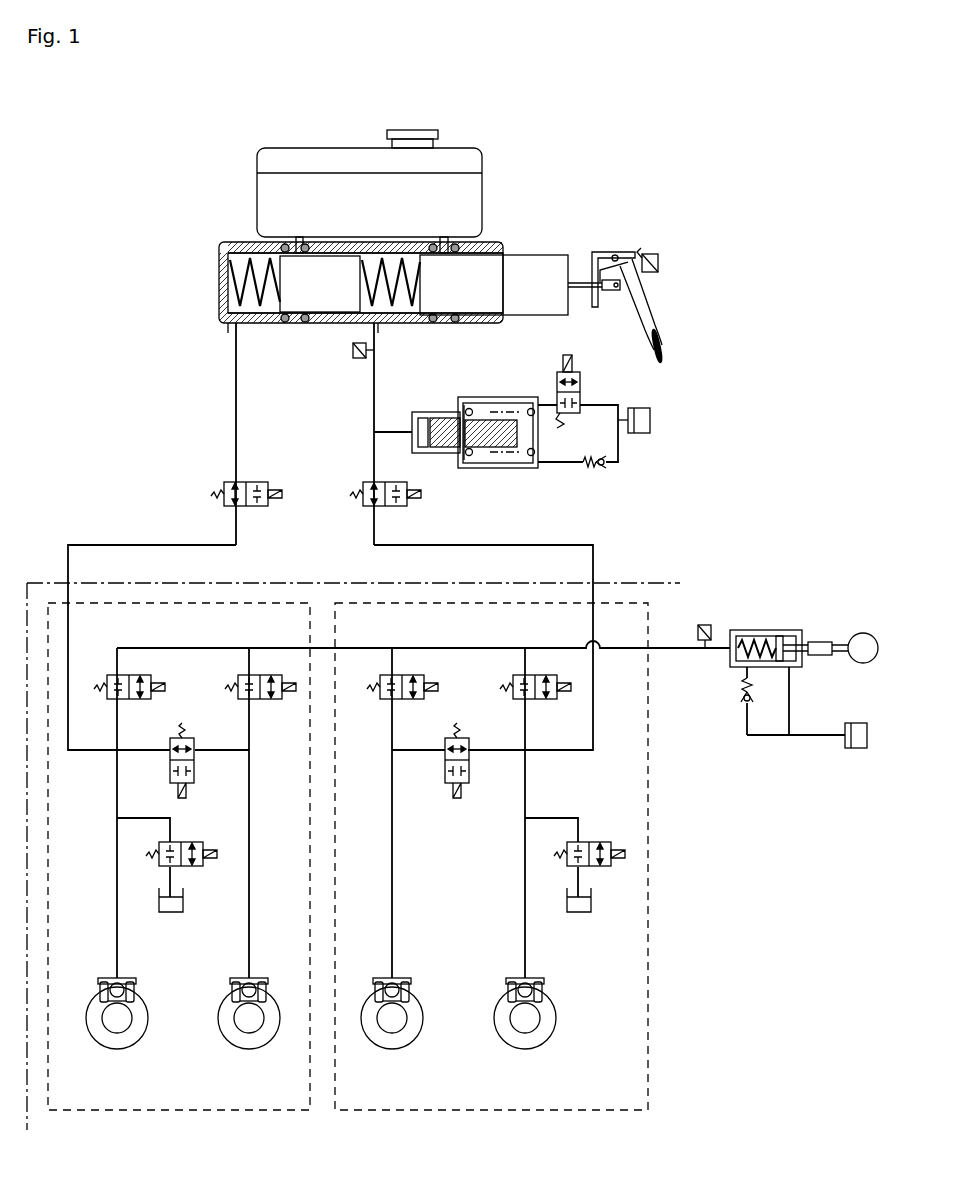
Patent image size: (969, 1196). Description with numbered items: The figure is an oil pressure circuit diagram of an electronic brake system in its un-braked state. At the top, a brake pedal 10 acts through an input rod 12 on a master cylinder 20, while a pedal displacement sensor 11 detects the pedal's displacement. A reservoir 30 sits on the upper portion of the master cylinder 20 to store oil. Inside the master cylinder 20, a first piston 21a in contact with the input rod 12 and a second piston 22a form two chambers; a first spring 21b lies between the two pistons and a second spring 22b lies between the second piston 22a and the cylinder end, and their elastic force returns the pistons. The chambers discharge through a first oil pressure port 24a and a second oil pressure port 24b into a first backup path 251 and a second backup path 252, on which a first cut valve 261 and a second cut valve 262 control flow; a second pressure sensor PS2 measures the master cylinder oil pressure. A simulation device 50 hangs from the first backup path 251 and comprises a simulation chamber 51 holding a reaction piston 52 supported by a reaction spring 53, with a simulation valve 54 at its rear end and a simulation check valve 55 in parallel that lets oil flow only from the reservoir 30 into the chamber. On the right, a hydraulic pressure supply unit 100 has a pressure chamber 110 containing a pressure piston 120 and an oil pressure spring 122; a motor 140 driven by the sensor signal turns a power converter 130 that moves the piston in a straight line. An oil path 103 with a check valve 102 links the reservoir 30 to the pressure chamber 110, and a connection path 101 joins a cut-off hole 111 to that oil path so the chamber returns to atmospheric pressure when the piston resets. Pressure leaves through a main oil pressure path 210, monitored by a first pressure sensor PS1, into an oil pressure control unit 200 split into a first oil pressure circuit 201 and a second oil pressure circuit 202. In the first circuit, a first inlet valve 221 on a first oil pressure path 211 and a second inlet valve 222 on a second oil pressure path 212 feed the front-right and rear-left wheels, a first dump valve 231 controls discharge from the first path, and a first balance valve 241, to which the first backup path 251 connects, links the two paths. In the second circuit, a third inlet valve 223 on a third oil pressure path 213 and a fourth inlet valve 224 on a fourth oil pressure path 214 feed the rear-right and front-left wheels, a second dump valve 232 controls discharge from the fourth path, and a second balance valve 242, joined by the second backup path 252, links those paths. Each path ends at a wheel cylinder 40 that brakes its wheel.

The brake pedal 10 is at (632, 302).
The pedal displacement sensor 11 is at (652, 253).
The input rod 12 is at (584, 280).
The master cylinder 20 is at (235, 243).
The first piston 21a is at (540, 258).
The first spring 21b is at (406, 298).
The second piston 22a is at (292, 310).
The second spring 22b is at (230, 284).
The first oil pressure port 24a is at (380, 326).
The second oil pressure port 24b is at (222, 323).
The reservoir 30 is at (281, 148).
The wheel cylinder 40 is at (100, 978).
The simulation device 50 is at (516, 430).
The simulation chamber 51 is at (500, 390).
The reaction piston 52 is at (438, 412).
The reaction spring 53 is at (466, 408).
The simulation valve 54 is at (581, 380).
The simulation check valve 55 is at (600, 468).
The hydraulic pressure supply unit 100 is at (785, 665).
The connection path 101 is at (789, 697).
The check valve 102 is at (740, 702).
The oil path 103 is at (810, 738).
The pressure chamber 110 is at (741, 630).
The cut-off hole 111 is at (798, 668).
The pressure piston 120 is at (783, 636).
The oil pressure spring 122 is at (760, 636).
The power converter 130 is at (820, 642).
The motor 140 is at (865, 633).
The oil pressure control unit 200 is at (298, 583).
The first oil pressure circuit 201 is at (366, 603).
The second oil pressure circuit 202 is at (259, 603).
The main oil pressure path 210 is at (702, 651).
The first oil pressure path 211 is at (525, 932).
The second oil pressure path 212 is at (392, 932).
The third oil pressure path 213 is at (249, 932).
The fourth oil pressure path 214 is at (117, 932).
The first inlet valve 221 is at (549, 675).
The second inlet valve 222 is at (418, 675).
The third inlet valve 223 is at (276, 675).
The fourth inlet valve 224 is at (144, 675).
The first dump valve 231 is at (607, 842).
The second dump valve 232 is at (201, 842).
The first balance valve 241 is at (465, 738).
The second balance valve 242 is at (190, 738).
The first backup path 251 is at (374, 408).
The second backup path 252 is at (236, 414).
The first cut valve 261 is at (366, 482).
The second cut valve 262 is at (262, 482).
The first pressure sensor PS1 is at (704, 625).
The second pressure sensor PS2 is at (352, 352).